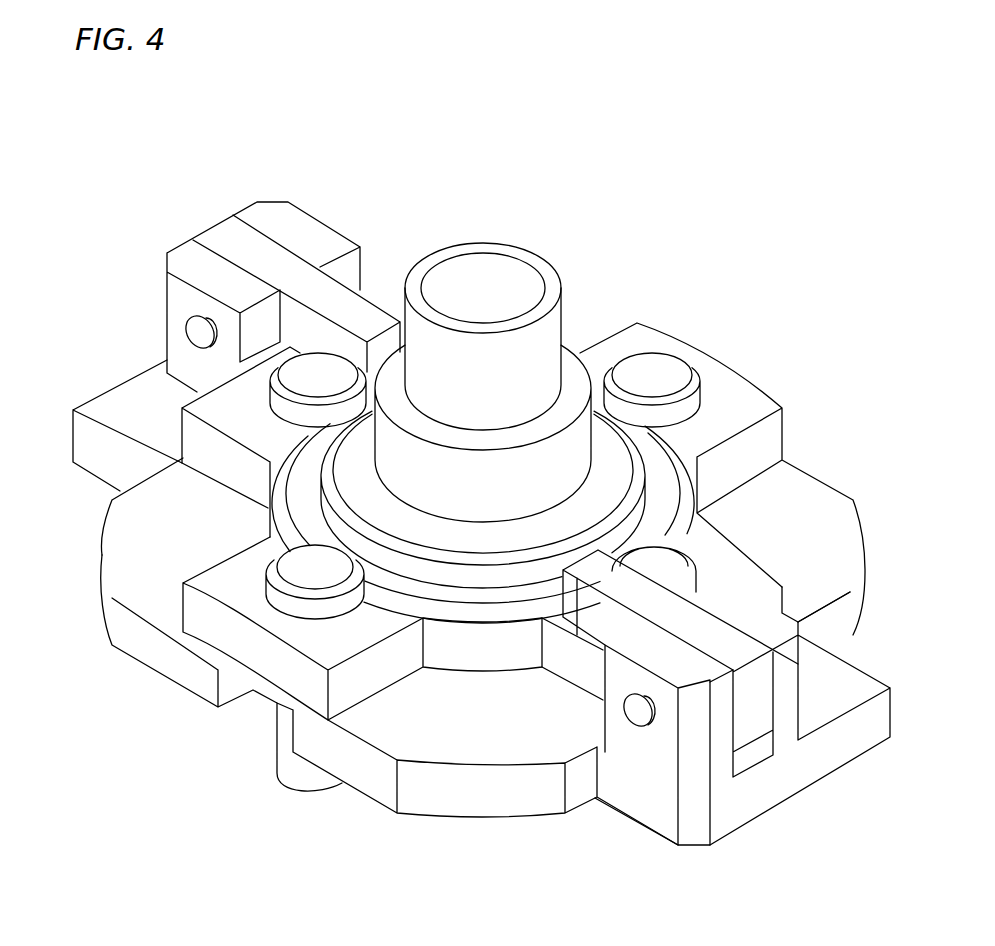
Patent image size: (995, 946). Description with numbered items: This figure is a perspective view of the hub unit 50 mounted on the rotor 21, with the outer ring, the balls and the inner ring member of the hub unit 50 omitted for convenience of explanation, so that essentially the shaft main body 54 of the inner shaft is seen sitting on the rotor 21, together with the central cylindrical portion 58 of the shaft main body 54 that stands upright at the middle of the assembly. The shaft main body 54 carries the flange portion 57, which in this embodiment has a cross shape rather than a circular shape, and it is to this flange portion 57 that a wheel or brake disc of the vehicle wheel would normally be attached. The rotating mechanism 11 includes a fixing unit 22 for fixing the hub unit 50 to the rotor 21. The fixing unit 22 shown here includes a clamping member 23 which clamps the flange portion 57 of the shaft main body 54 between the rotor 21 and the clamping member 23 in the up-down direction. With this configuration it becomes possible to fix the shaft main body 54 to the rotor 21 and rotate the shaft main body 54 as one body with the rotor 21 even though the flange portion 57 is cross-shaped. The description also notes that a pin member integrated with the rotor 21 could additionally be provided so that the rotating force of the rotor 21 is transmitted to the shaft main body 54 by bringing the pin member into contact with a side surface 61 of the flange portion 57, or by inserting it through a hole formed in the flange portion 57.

The rotating mechanism 11 is at (153, 692).
The rotor 21 is at (94, 588).
The fixing unit 22 is at (247, 195).
The clamping member 23 is at (367, 312).
The hub unit 50 is at (590, 331).
The shaft main body 54 is at (418, 567).
The flange portion 57 is at (180, 428).
The cylindrical boss 58 is at (545, 265).
The side surface 61 is at (203, 445).